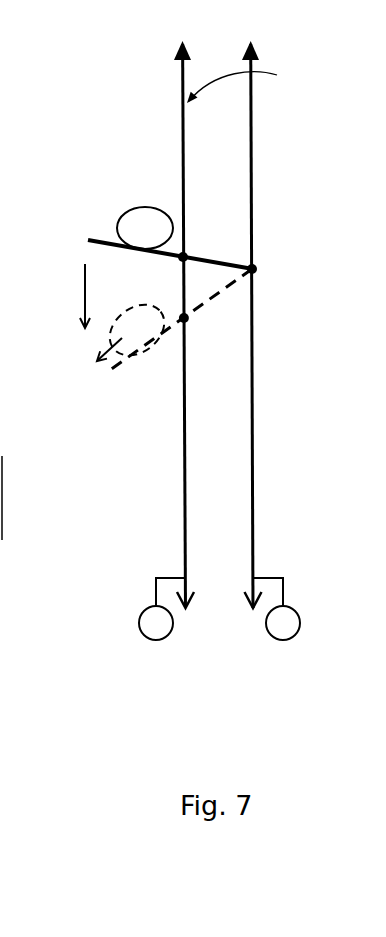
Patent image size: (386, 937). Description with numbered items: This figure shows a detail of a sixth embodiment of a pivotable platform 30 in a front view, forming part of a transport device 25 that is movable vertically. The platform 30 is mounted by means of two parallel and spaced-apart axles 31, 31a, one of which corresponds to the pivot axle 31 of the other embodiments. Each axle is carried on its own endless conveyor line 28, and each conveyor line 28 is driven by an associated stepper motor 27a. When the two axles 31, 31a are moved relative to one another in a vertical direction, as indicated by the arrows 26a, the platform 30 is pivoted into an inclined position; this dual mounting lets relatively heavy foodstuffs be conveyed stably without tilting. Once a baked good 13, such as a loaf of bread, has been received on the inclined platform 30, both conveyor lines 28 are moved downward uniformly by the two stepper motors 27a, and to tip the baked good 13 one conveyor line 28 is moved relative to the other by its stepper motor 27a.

The loaf of bread 13 is at (143, 217).
The transport device 25 is at (258, 97).
The arrows indicating relative vertical movement 26a is at (85, 272).
The stepper motor 27a is at (140, 620).
The conveyor line 28 is at (181, 120).
The platform 30 is at (95, 239).
The pivot axle 31 is at (253, 270).
The axle 31a is at (194, 256).